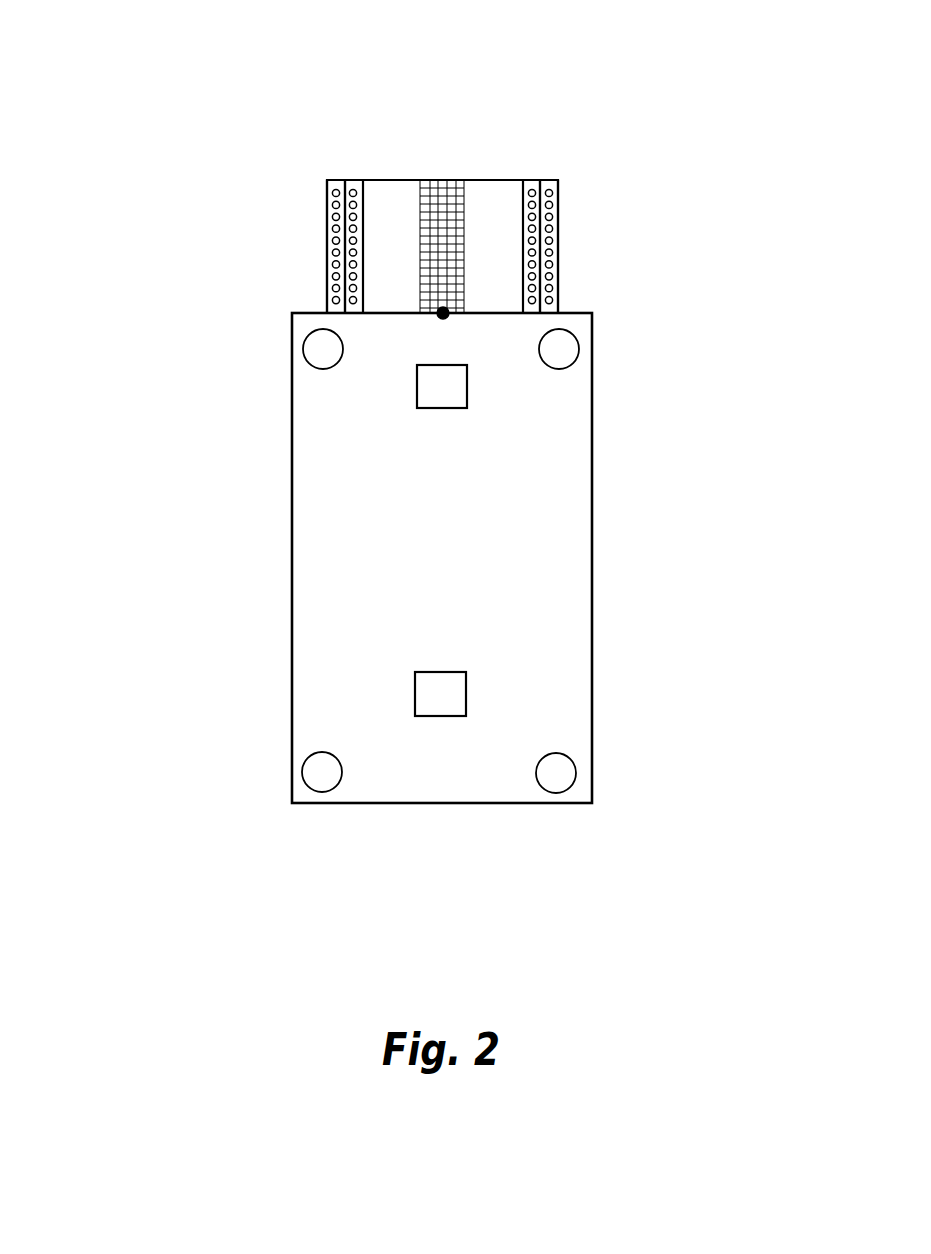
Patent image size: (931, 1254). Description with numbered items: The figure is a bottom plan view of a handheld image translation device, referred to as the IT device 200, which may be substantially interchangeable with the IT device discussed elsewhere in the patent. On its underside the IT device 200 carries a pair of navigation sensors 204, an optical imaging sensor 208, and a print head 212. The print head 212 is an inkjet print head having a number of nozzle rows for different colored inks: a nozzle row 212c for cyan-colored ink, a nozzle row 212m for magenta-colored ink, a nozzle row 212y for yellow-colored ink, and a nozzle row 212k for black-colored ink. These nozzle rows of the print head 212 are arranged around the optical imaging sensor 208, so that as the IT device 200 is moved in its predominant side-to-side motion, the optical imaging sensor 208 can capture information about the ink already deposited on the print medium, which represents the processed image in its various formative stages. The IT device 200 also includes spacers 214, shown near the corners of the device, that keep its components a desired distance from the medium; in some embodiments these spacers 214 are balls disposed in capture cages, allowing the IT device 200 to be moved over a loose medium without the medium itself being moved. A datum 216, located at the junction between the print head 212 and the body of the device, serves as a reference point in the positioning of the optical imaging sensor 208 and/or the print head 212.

The IT device 200 is at (143, 82).
The navigation sensor 204 is at (417, 388).
The optical imaging sensor 208 is at (442, 180).
The print head 212 is at (617, 261).
The nozzle row for cyan-colored ink 212c is at (330, 180).
The nozzle row for magenta-colored ink 212m is at (353, 180).
The nozzle row for yellow-colored ink 212y is at (532, 180).
The nozzle row for black-colored ink 212k is at (558, 180).
The spacer 214 is at (580, 351).
The datum 216 is at (447, 317).